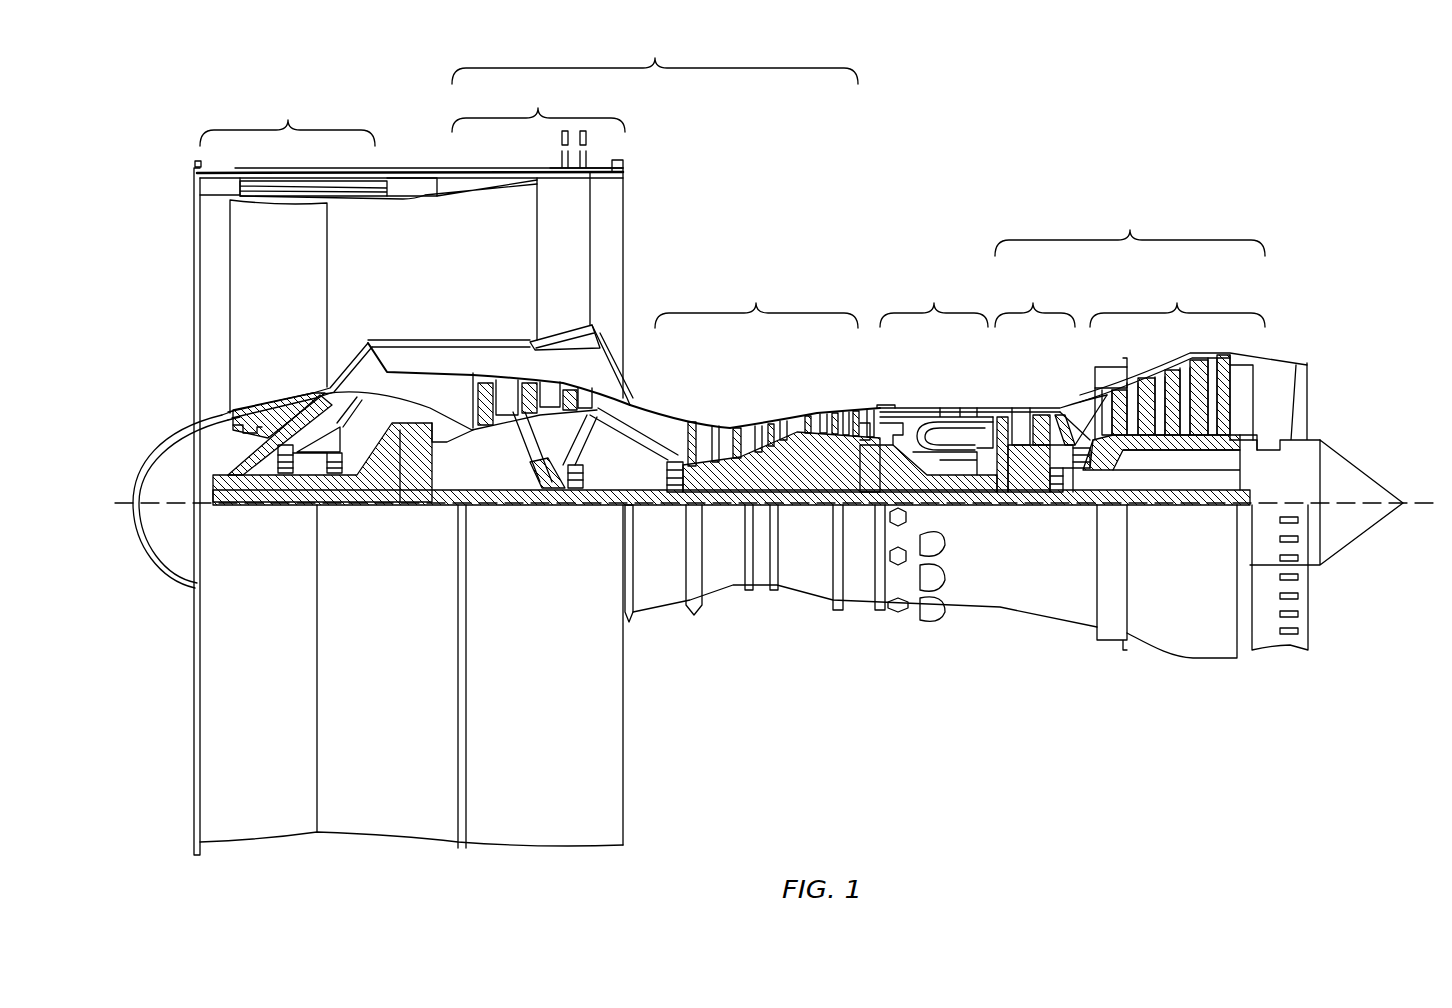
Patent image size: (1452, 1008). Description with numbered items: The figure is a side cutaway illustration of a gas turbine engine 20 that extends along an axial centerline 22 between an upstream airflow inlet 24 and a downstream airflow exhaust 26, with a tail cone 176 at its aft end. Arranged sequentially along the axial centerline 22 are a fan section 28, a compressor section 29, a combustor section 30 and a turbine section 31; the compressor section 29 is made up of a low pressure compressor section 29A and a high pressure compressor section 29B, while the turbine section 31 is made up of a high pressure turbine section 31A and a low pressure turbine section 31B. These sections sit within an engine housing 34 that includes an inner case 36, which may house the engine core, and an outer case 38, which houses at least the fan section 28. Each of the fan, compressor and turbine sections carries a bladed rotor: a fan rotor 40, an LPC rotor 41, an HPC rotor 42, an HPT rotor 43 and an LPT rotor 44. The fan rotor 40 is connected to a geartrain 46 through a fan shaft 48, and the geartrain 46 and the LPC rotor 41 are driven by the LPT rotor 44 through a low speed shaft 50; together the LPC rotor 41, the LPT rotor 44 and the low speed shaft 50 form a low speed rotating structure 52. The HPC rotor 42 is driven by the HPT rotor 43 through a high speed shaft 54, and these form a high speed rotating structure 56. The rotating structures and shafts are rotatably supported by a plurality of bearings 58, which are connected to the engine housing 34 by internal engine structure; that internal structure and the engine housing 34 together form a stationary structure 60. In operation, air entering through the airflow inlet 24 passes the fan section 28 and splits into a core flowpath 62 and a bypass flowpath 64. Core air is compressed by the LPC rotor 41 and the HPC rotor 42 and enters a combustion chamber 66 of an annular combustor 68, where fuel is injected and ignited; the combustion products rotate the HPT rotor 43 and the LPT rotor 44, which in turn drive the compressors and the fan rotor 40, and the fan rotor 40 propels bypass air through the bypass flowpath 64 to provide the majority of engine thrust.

The gas turbine engine 20 is at (148, 208).
The axial centerline 22 is at (1425, 507).
The airflow inlet 24 is at (194, 270).
The airflow exhaust 26 is at (1307, 400).
The fan section 28 is at (287, 118).
The compressor section 29 is at (655, 57).
The low pressure compressor (LPC) section 29A is at (538, 121).
The high pressure compressor (HPC) section 29B is at (755, 369).
The combustor section 30 is at (934, 301).
The turbine section 31 is at (1130, 226).
The high pressure turbine (HPT) section 31A is at (993, 384).
The low pressure turbine (LPT) section 31B is at (1193, 358).
The engine housing 34 is at (865, 609).
The inner case 36 is at (860, 612).
The outer case 38 is at (580, 848).
The fan rotor 40 is at (222, 417).
The LPC rotor 41 is at (520, 450).
The HPC rotor 42 is at (800, 455).
The HPT rotor 43 is at (1012, 490).
The LPT rotor 44 is at (1170, 450).
The geartrain 46 is at (412, 503).
The fan shaft 48 is at (265, 503).
The low speed shaft 50 is at (1215, 507).
The low speed rotating structure 52 is at (1160, 515).
The high speed shaft 54 is at (955, 490).
The high speed rotating structure 56 is at (722, 515).
The bearings 58 is at (330, 478).
The stationary structure 60 is at (655, 632).
The core flowpath 62 is at (650, 425).
The bypass flowpath 64 is at (432, 258).
The combustion chamber 66 is at (940, 435).
The combustor 68 is at (972, 420).
The tail cone 176 is at (1355, 470).